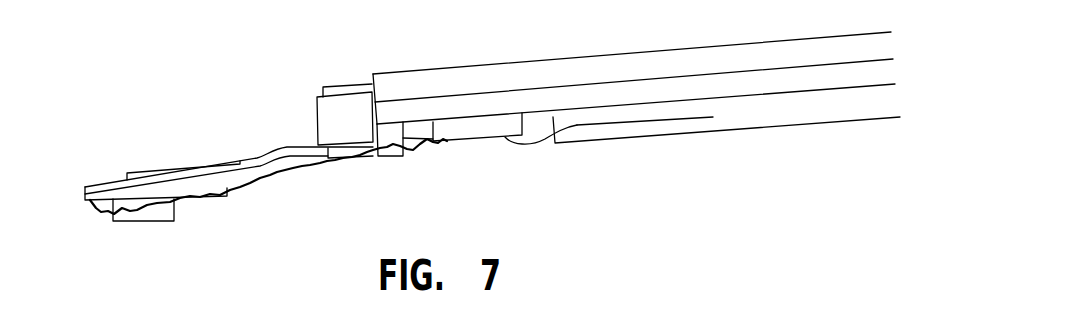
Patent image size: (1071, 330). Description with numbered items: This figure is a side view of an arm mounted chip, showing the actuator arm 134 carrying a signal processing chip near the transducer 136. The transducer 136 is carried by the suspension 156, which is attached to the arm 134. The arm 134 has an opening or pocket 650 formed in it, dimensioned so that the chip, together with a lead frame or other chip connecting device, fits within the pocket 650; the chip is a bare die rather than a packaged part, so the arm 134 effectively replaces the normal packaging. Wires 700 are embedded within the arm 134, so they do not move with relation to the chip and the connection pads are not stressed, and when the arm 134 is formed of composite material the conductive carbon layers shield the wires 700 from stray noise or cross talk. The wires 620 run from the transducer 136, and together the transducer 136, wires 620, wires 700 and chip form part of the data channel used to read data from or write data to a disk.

The actuator arm 134 is at (522, 78).
The suspension 156 is at (217, 160).
The transducer 136 is at (113, 213).
The wires 620 is at (248, 188).
The pocket 650 is at (552, 136).
The wires 700 is at (623, 126).